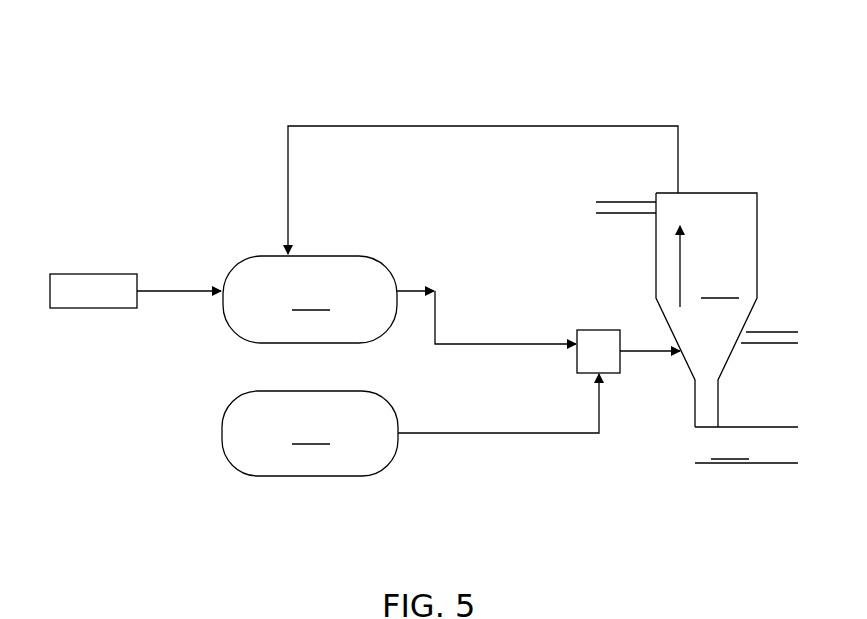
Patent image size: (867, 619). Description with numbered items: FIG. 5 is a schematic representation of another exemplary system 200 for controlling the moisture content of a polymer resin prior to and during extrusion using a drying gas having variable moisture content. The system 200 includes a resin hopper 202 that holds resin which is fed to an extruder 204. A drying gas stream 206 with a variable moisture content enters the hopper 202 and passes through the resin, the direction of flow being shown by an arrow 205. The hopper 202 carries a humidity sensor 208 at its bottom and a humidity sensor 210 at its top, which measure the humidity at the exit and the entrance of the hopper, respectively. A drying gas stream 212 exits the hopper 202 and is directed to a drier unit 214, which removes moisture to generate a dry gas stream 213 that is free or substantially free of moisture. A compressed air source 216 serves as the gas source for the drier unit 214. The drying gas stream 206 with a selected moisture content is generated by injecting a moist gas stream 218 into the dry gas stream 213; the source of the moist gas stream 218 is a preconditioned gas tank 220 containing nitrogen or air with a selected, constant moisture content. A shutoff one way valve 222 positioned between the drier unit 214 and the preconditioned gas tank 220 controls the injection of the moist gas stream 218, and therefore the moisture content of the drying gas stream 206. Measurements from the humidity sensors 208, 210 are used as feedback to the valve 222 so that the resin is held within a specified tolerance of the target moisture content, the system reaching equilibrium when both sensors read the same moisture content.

The system 200 is at (471, 49).
The resin hopper 202 is at (706, 310).
The extruder 204 is at (746, 445).
The arrow 205 is at (682, 252).
The drying gas stream 206 is at (643, 351).
The humidity sensor 208 is at (778, 345).
The humidity sensor 210 is at (608, 215).
The drying gas stream 212 is at (605, 126).
The dry gas stream 213 is at (435, 335).
The drier unit 214 is at (310, 299).
The compressed air source 216 is at (90, 278).
The moist gas stream 218 is at (502, 433).
The preconditioned gas tank 220 is at (310, 433).
The shutoff one way valve 222 is at (592, 330).